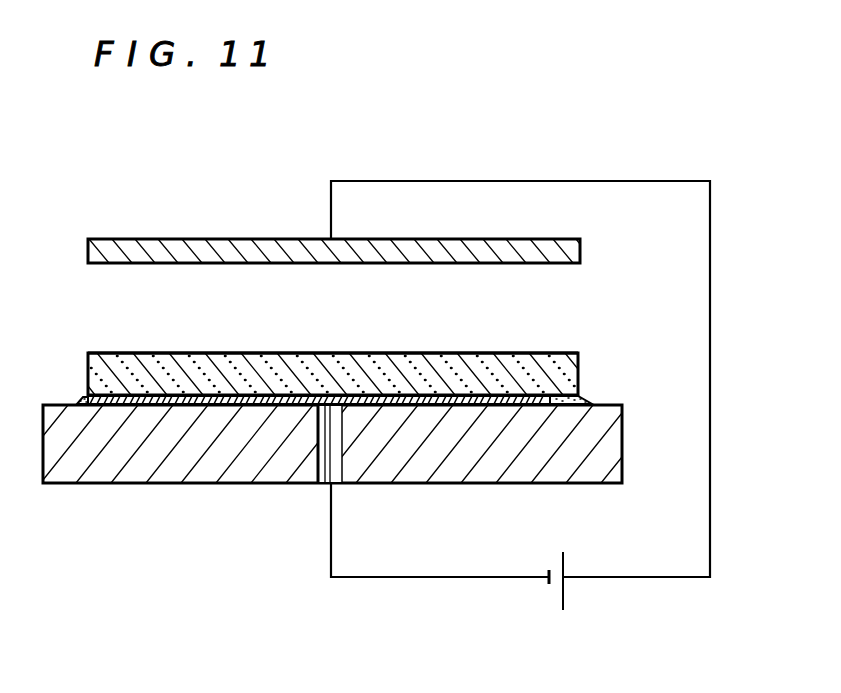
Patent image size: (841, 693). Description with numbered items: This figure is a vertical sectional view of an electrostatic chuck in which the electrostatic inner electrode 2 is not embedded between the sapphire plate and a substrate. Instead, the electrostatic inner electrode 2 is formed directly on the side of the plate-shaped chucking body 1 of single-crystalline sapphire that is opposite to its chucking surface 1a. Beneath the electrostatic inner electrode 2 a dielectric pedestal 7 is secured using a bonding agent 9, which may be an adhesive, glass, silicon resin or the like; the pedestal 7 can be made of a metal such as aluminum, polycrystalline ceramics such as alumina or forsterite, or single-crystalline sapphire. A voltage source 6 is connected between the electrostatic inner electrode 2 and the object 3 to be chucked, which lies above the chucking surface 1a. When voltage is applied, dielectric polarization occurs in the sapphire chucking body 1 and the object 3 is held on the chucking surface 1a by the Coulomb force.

The chucking body 1 is at (523, 367).
The chucking surface 1a is at (450, 353).
The electrostatic inner electrode 2 is at (542, 397).
The object to be chucked 3 is at (492, 239).
The power source 6 is at (568, 590).
The dielectric pedestal 7 is at (182, 472).
The bonding agent 9 is at (87, 397).